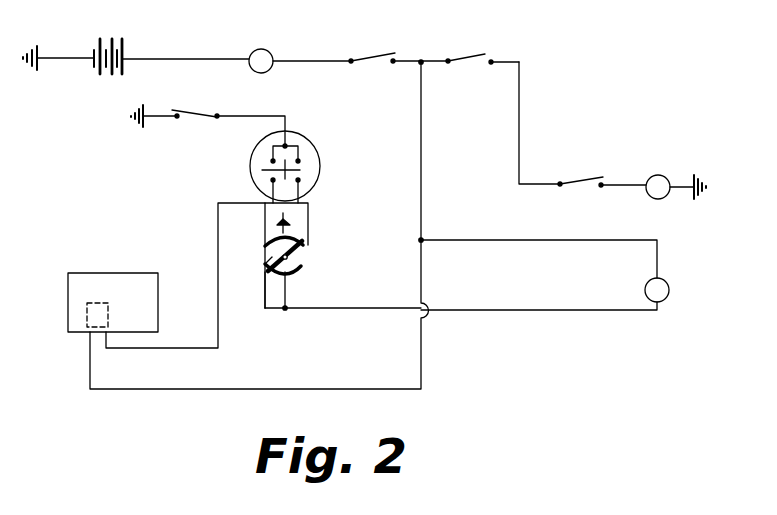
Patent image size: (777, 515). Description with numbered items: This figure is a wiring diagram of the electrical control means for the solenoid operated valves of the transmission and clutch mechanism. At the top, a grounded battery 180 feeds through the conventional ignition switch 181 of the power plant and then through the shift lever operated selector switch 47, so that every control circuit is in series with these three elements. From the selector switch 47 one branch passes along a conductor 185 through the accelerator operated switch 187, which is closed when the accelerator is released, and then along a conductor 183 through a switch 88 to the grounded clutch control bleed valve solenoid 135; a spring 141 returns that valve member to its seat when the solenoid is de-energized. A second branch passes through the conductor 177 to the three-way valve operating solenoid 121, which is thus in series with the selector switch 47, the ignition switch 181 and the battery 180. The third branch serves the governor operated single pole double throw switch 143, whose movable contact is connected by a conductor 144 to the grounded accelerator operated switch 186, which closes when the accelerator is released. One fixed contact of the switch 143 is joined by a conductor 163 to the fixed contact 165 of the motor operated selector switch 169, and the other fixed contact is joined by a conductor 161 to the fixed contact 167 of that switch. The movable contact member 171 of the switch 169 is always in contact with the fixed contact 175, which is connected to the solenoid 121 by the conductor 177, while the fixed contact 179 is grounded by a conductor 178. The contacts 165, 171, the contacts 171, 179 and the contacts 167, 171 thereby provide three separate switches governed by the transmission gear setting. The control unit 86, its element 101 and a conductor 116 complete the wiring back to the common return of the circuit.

The battery 180 is at (128, 38).
The ignition switch 181 is at (263, 49).
The selector switch 47 is at (368, 49).
The accelerator operated switch 187 is at (483, 56).
The conductor 185 is at (520, 116).
The switch 88 is at (577, 174).
The conductor 183 is at (622, 190).
The clutch control bleed valve solenoid 135 is at (662, 176).
The accelerator operated switch 186 is at (192, 119).
The conductor 144 is at (255, 115).
The single pole double throw switch 143 is at (313, 137).
The spring 141 is at (300, 170).
The conductor 161 is at (262, 213).
The conductor 163 is at (310, 212).
The conductor 178 is at (294, 208).
The fixed contact 165 is at (305, 255).
The fixed contact 179 is at (265, 243).
The fixed contact 167 is at (266, 252).
The movable contact member 171 is at (268, 272).
The motor operated selector switch 169 is at (307, 264).
The fixed contact 175 is at (296, 268).
The conductor 116 is at (262, 303).
The conductor 177 is at (285, 298).
The solenoid 121 is at (668, 293).
The control unit 86 is at (78, 272).
The choke valve unit 101 is at (88, 317).